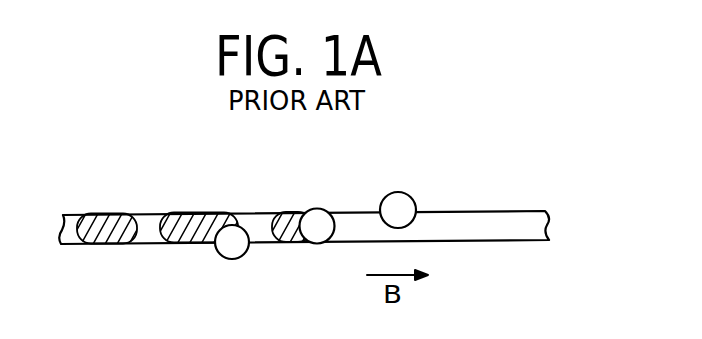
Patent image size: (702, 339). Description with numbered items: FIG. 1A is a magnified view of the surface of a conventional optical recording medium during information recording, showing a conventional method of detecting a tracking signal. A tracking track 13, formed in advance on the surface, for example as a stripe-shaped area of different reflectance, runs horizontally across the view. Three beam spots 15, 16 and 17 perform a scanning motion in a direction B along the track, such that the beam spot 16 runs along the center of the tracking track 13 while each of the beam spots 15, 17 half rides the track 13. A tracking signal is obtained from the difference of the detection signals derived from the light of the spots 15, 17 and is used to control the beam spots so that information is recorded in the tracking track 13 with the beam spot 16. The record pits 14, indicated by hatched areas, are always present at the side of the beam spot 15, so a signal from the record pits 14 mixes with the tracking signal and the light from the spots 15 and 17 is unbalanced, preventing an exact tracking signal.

The tracking track 13 is at (508, 216).
The record pits 14 is at (103, 244).
The beam spot 15 is at (233, 260).
The beam spot 16 is at (322, 245).
The beam spot 17 is at (410, 196).